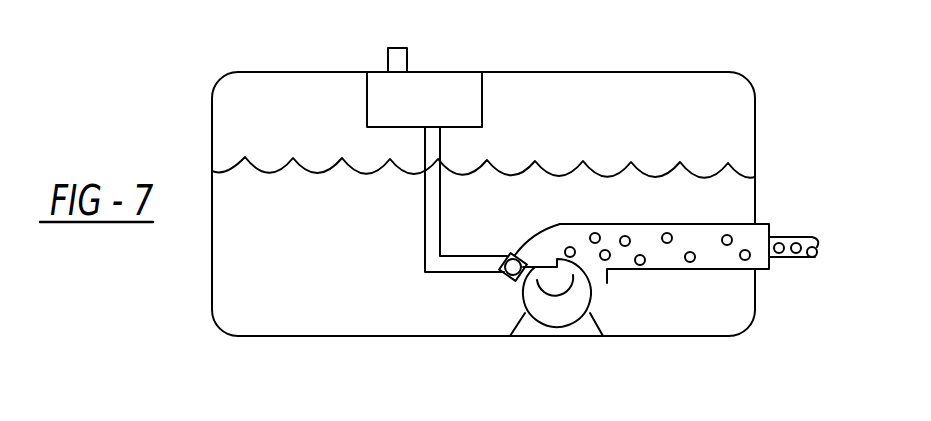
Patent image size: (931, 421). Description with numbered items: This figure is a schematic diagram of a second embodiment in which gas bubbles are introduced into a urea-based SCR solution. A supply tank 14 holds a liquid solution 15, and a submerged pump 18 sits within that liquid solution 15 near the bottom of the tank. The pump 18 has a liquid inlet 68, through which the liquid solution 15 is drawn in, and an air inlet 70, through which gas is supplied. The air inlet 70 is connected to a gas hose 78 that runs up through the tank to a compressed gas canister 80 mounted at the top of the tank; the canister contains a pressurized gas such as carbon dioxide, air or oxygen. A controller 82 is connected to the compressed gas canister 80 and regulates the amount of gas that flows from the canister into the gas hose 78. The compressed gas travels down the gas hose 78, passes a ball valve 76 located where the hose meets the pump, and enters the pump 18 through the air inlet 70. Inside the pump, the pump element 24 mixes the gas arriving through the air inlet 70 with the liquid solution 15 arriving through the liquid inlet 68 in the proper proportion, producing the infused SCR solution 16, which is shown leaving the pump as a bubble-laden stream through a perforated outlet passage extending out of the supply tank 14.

The supply tank 14 is at (747, 76).
The liquid solution 15 is at (332, 258).
The infused SCR solution 16 is at (652, 237).
The pump 18 is at (588, 292).
The pump element 24 is at (563, 280).
The liquid inlet 68 is at (501, 283).
The air inlet 70 is at (519, 256).
The ball valve 76 is at (512, 257).
The gas hose 78 is at (433, 193).
The compressed gas canister 80 is at (442, 108).
The controller 82 is at (386, 59).